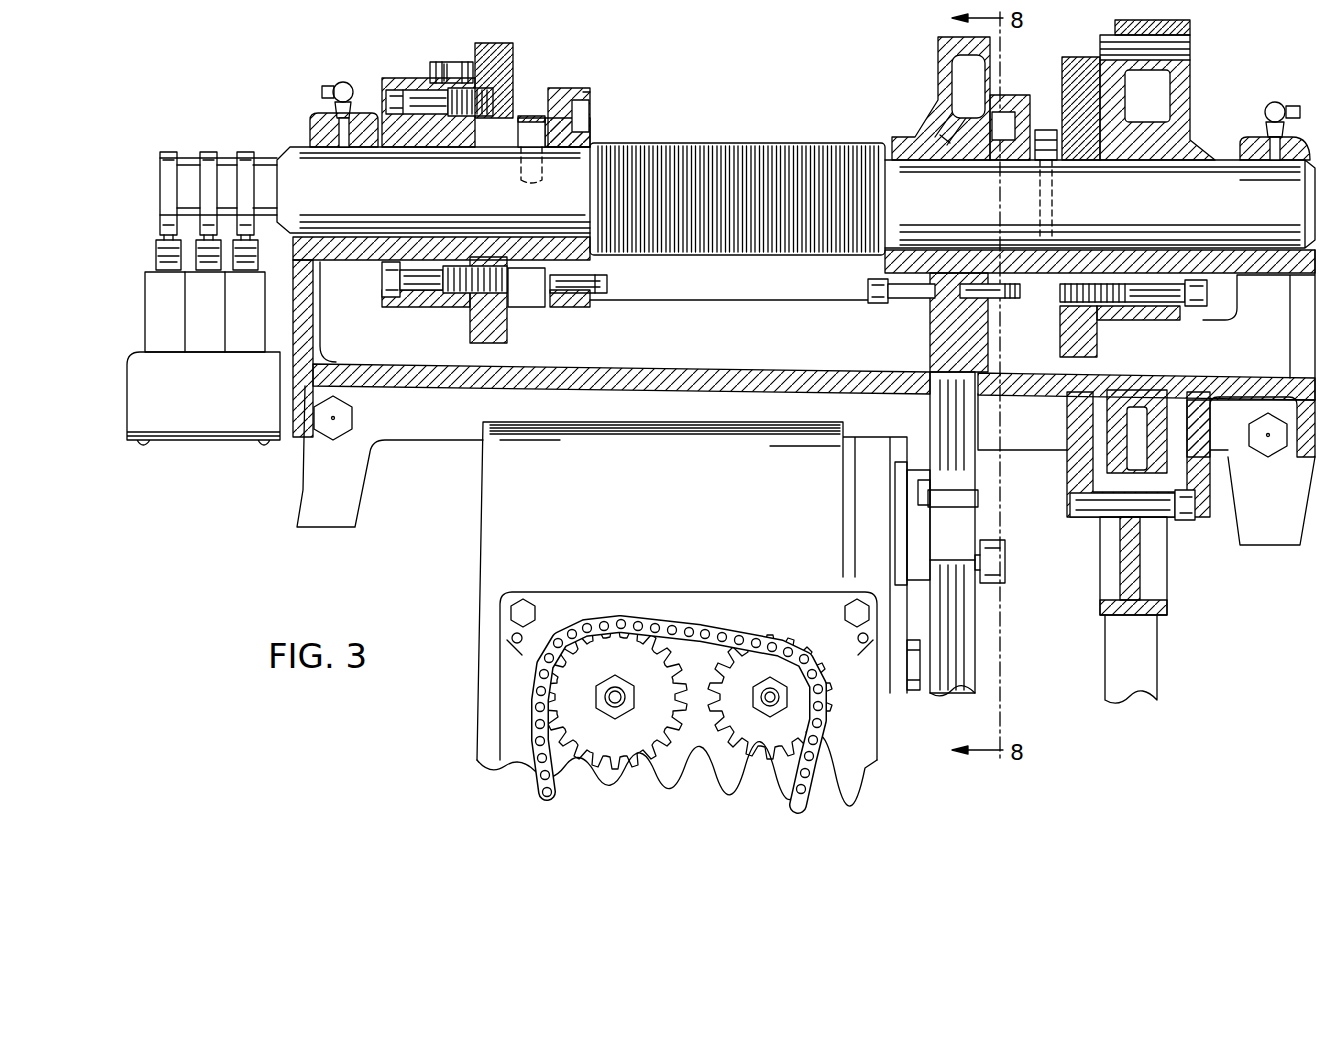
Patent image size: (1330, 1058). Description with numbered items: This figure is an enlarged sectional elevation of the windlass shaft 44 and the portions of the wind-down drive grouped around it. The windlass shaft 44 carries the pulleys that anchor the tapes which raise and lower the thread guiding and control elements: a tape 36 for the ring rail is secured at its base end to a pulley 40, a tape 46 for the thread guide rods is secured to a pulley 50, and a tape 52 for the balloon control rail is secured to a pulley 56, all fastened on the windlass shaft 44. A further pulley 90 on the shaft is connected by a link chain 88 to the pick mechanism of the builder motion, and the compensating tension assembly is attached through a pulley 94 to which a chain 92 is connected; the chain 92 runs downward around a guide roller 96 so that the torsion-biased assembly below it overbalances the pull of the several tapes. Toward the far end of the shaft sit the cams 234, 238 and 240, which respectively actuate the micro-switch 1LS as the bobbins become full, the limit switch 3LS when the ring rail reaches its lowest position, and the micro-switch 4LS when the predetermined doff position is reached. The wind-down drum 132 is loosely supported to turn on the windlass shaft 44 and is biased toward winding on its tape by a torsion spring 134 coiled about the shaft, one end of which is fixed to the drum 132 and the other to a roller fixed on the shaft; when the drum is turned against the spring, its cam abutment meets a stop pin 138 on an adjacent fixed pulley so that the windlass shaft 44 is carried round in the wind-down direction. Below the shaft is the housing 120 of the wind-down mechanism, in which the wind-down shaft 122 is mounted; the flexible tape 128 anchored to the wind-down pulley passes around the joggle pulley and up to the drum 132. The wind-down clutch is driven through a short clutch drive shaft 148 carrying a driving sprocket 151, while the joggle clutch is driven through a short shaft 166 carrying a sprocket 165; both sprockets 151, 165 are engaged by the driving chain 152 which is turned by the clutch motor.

The cam 234 is at (165, 152).
The cam 238 is at (208, 152).
The cam 240 is at (246, 152).
The micro-switch 1LS is at (158, 262).
The micro-switch 4LS is at (255, 285).
The limit switch 3LS is at (205, 350).
The windlass shaft 44 is at (1180, 206).
The torsion spring 134 is at (735, 145).
The pulley 40 is at (478, 322).
The chain 92 is at (432, 62).
The pulley 94 is at (456, 62).
The tape 36 is at (494, 43).
The tape 46 is at (530, 116).
The tape 52 is at (570, 88).
The pulley 56 is at (592, 96).
The pulley 50 is at (526, 268).
The wind-down drum 132 is at (938, 50).
The pulley 90 is at (1190, 76).
The stop pin 138 is at (932, 334).
The housing 120 is at (478, 570).
The sprocket 165 is at (592, 640).
The short drive shaft 166 is at (604, 692).
The driving sprocket 151 is at (805, 698).
The clutch drive shaft 148 is at (772, 692).
The driving chain 152 is at (533, 768).
The flexible tape 128 is at (975, 473).
The wind-down shaft 122 is at (1000, 560).
The guide roller 96 is at (1165, 608).
The link chain 88 is at (1150, 650).